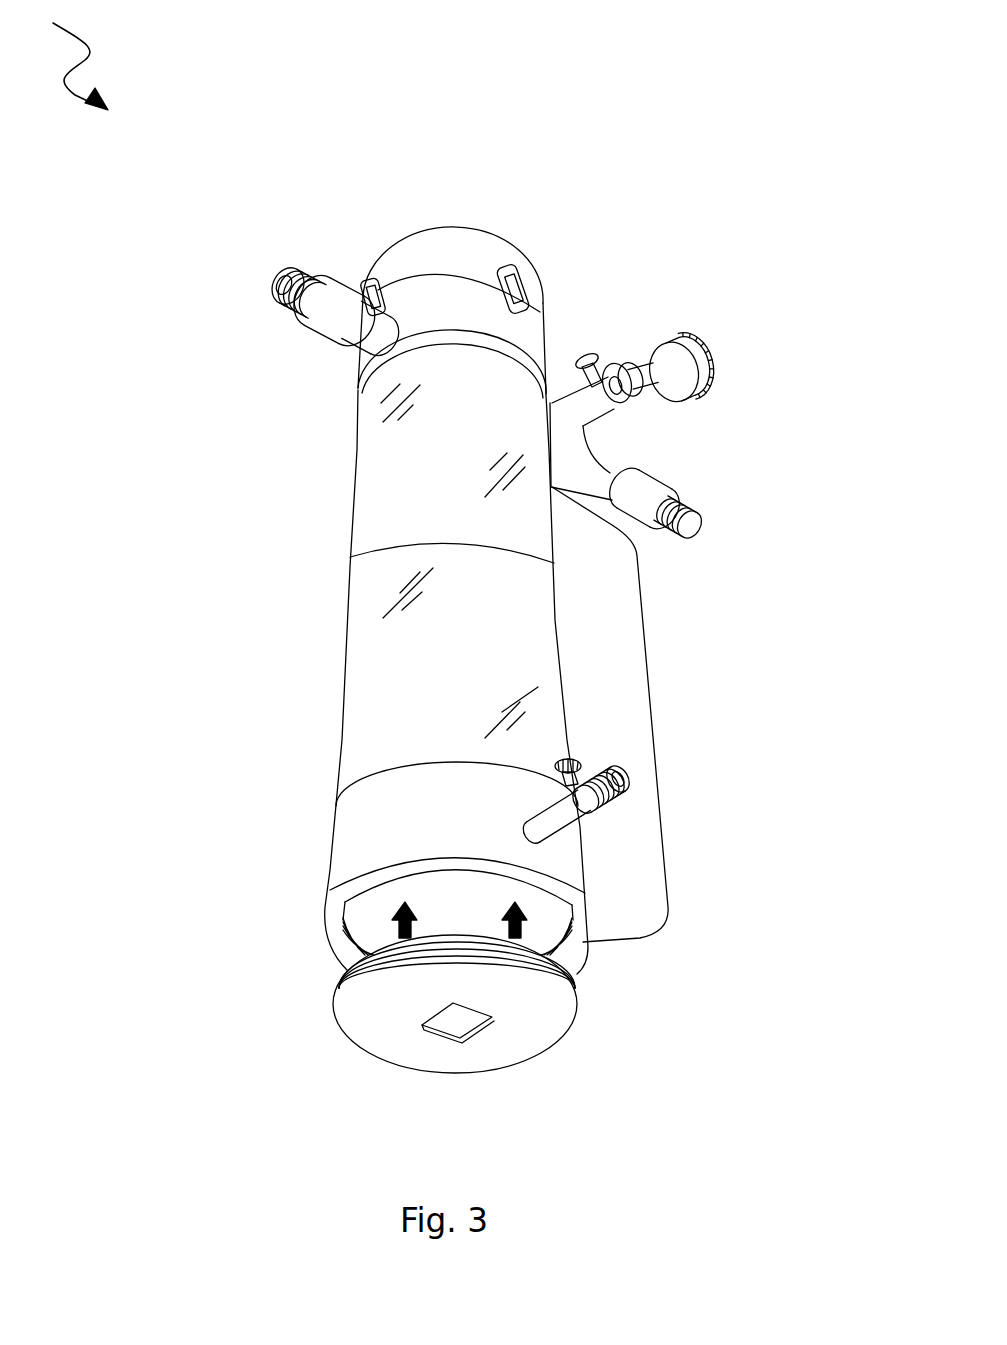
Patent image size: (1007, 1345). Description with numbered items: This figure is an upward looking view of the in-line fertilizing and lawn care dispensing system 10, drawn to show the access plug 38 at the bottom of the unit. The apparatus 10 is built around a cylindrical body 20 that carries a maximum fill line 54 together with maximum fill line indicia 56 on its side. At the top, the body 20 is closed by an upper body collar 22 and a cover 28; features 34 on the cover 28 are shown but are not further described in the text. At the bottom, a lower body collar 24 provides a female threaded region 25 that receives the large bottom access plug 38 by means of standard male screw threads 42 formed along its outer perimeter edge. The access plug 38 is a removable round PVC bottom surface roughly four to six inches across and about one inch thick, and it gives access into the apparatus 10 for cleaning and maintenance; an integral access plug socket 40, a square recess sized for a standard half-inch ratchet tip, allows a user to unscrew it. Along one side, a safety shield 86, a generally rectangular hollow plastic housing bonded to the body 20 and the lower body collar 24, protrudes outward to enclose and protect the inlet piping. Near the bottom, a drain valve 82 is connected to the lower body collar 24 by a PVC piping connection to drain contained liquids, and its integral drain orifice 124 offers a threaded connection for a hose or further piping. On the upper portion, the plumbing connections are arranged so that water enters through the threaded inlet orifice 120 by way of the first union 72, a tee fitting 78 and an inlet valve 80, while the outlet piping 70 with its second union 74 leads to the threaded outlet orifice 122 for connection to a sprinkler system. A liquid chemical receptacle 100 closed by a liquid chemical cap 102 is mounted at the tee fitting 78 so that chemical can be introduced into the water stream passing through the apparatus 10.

The in-line fertilizing and lawn care dispensing system 10 is at (65, 56).
The body 20 is at (373, 638).
The upper body collar 22 is at (530, 342).
The lower body collar 24 is at (363, 823).
The female threaded region 25 is at (573, 940).
The cover 28 is at (478, 237).
The strap loops 34 is at (366, 298).
The access plug 38 is at (543, 1033).
The access plug socket 40 is at (443, 1010).
The male screw threads 42 is at (337, 980).
The maximum fill line 54 is at (360, 562).
The maximum fill line indicia 56 is at (413, 527).
The outlet piping 70 is at (357, 335).
The first union 72 is at (647, 515).
The second union 74 is at (310, 323).
The tee fitting 78 is at (583, 448).
The inlet valve 80 is at (622, 395).
The drain valve 82 is at (586, 778).
The safety shield 86 is at (625, 613).
The liquid chemical receptacle 100 is at (678, 377).
The liquid chemical cap 102 is at (713, 366).
The inlet orifice 120 is at (693, 525).
The outlet orifice 122 is at (273, 303).
The drain orifice 124 is at (619, 793).